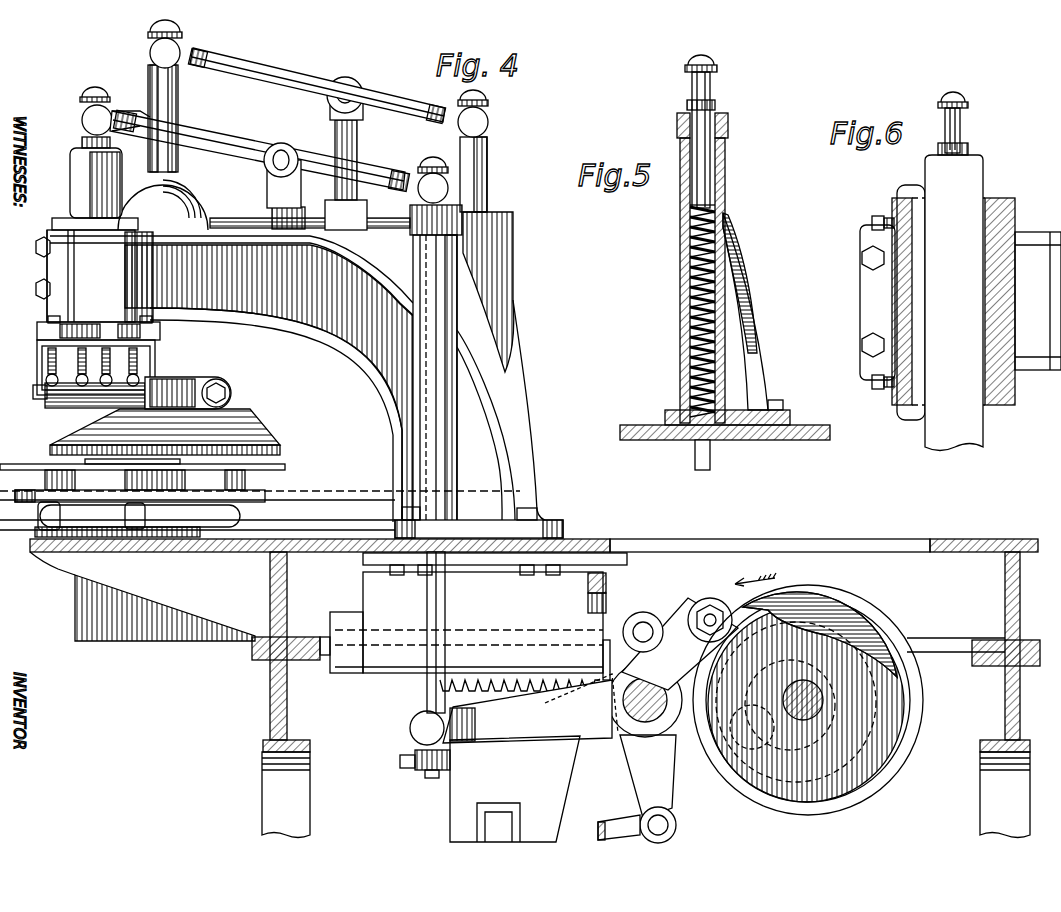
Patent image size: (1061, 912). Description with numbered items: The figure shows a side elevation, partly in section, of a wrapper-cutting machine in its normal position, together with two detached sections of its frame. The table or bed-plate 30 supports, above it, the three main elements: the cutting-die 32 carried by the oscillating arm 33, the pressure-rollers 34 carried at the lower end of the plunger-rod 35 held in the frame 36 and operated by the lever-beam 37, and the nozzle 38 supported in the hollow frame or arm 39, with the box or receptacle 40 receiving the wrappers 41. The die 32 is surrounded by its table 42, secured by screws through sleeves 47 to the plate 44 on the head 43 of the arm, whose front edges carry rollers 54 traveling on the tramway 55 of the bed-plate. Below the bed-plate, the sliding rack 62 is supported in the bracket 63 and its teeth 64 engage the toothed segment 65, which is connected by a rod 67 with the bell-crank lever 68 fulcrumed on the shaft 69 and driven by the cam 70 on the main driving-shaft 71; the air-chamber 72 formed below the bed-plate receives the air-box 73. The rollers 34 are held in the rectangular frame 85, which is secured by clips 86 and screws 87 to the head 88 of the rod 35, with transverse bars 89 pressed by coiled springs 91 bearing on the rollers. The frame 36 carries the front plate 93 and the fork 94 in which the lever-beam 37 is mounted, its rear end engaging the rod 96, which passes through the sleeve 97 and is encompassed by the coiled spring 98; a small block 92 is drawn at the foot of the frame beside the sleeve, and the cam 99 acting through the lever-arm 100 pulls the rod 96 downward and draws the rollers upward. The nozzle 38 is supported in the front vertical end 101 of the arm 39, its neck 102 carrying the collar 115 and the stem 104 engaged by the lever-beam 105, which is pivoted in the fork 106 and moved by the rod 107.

In FIG. 4, the table or bed-plate 30 is at (585, 541).
In FIG. 5, the table or bed-plate 30 is at (796, 436).
In FIG. 4, the cutting-die 32 is at (196, 469).
In FIG. 4, the oscillating arm 33 is at (197, 515).
In FIG. 4, the pressure-rollers 34 is at (70, 405).
In FIG. 4, the plunger-rod 35 is at (70, 186).
In FIG. 6, the plunger-rod 35 is at (954, 271).
In FIG. 4, the frame 36 is at (298, 370).
In FIG. 5, the frame 36 is at (749, 311).
In FIG. 6, the frame 36 is at (1038, 301).
In FIG. 4, the lever-beam 37 is at (560, 462).
In FIG. 4, the nozzle 38 is at (240, 430).
In FIG. 4, the hollow frame or arm 39 is at (500, 290).
In FIG. 4, the box or receptacle 40 is at (142, 596).
In FIG. 4, the wrappers 41 is at (132, 496).
In FIG. 4, the table 42 is at (32, 466).
In FIG. 4, the head 43 is at (140, 516).
In FIG. 4, the plate 44 is at (38, 512).
In FIG. 4, the sleeves 47 is at (50, 482).
In FIG. 4, the rollers 54 is at (146, 516).
In FIG. 4, the tramway 55 is at (36, 534).
In FIG. 4, the sliding rack 62 is at (642, 688).
In FIG. 4, the bracket 63 is at (473, 613).
In FIG. 4, the teeth 64 is at (528, 690).
In FIG. 4, the toothed segment 65 is at (515, 789).
In FIG. 4, the rod 67 is at (612, 822).
In FIG. 4, the bell-crank lever 68 is at (648, 789).
In FIG. 4, the shaft 69 is at (680, 644).
In FIG. 4, the cam 70 is at (752, 796).
In FIG. 4, the main driving-shaft 71 is at (806, 711).
In FIG. 4, the air-chamber 72 is at (606, 588).
In FIG. 4, the air-box 73 is at (606, 606).
In FIG. 4, the rectangular frame 85 is at (37, 360).
In FIG. 4, the clips 86 is at (37, 331).
In FIG. 4, the screws 87 is at (46, 320).
In FIG. 4, the head 88 is at (84, 326).
In FIG. 4, the transverse bars 89 is at (36, 398).
In FIG. 4, the coiled springs 91 is at (150, 358).
In FIG. 4, the stop block 92 is at (532, 512).
In FIG. 5, the stop block 92 is at (780, 400).
In FIG. 4, the front plate 93 is at (47, 270).
In FIG. 6, the front plate 93 is at (860, 306).
In FIG. 4, the fork 94 is at (284, 186).
In FIG. 4, the rod 96 is at (437, 166).
In FIG. 5, the rod 96 is at (712, 102).
In FIG. 4, the sleeve 97 is at (454, 458).
In FIG. 5, the sleeve 97 is at (680, 277).
In FIG. 5, the coiled spring 98 is at (680, 318).
In FIG. 4, the cam 99 is at (806, 697).
In FIG. 4, the lever-arm 100 is at (530, 708).
In FIG. 4, the front vertical end 101 is at (163, 205).
In FIG. 4, the neck 102 is at (200, 386).
In FIG. 4, the stem 104 is at (150, 78).
In FIG. 4, the lever-beam 105 is at (297, 72).
In FIG. 4, the fork 106 is at (357, 150).
In FIG. 4, the rod 107 is at (487, 176).
In FIG. 4, the collar 115 is at (232, 393).